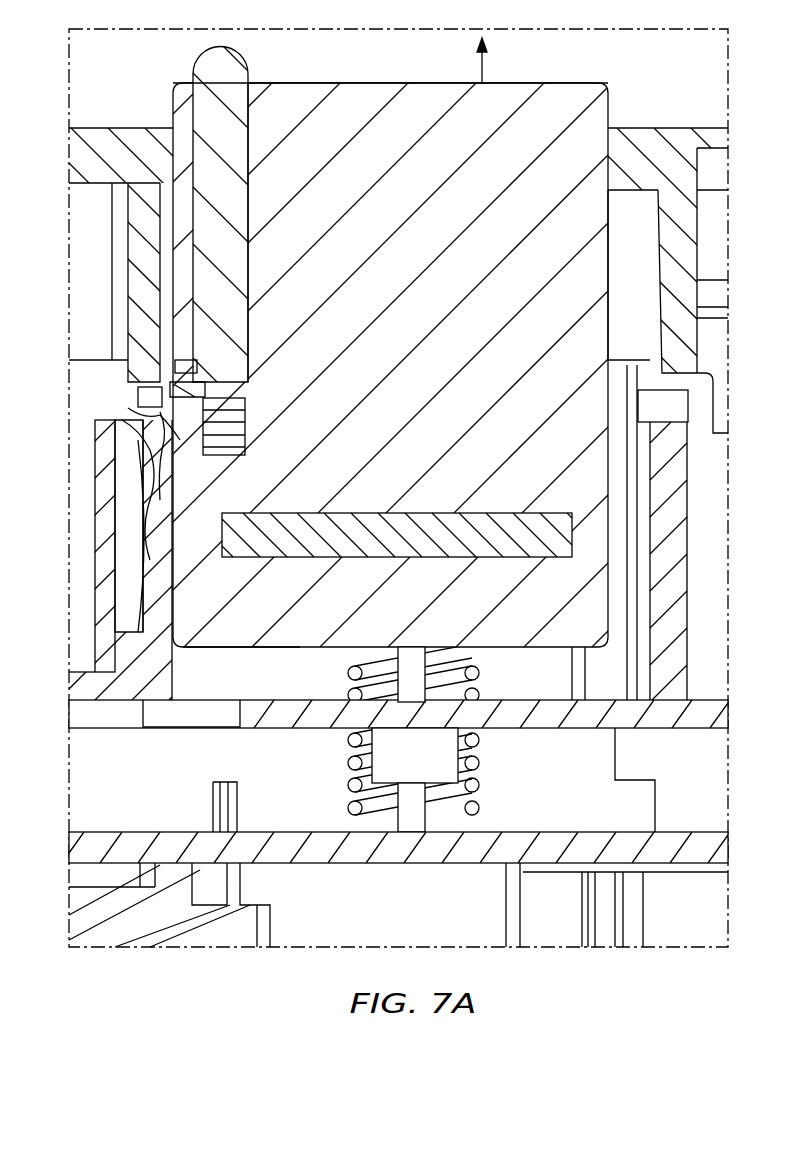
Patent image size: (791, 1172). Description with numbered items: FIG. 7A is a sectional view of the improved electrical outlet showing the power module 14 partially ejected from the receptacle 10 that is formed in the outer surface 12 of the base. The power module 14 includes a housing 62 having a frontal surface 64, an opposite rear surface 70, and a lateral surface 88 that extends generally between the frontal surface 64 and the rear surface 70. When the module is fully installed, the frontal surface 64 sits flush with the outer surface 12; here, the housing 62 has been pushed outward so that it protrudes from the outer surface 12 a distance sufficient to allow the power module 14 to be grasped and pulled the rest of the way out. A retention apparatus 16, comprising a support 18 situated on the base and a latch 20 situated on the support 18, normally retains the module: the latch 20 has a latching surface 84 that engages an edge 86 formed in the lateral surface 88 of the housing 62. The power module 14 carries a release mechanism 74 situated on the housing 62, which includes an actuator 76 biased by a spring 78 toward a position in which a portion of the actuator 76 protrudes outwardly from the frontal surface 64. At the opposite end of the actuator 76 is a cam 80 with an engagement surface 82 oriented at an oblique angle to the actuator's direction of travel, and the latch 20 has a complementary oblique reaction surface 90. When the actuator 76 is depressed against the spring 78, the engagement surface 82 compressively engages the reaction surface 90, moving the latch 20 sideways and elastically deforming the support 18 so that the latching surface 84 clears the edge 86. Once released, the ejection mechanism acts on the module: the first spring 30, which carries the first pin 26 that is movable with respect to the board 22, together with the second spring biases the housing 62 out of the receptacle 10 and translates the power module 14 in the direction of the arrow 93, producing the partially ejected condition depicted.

The receptacle 10 is at (642, 235).
The outer surface 12 is at (655, 128).
The power module 14 is at (305, 82).
The retention apparatus 16 is at (115, 470).
The support 18 is at (115, 505).
The latch 20 is at (137, 420).
The board 22 is at (308, 840).
The first pin 26 is at (415, 820).
The first spring 30 is at (485, 777).
The housing 62 is at (608, 262).
The frontal surface 64 is at (405, 83).
The rear surface 70 is at (228, 655).
The release mechanism 74 is at (250, 197).
The actuator 76 is at (200, 48).
The spring 78 is at (245, 420).
The cam 80 is at (185, 372).
The engagement surface 82 is at (155, 425).
The latching surface 84 is at (165, 470).
The edge 86 is at (197, 395).
The lateral surface 88 is at (165, 236).
The reaction surface 90 is at (128, 360).
The arrow 93 is at (482, 60).